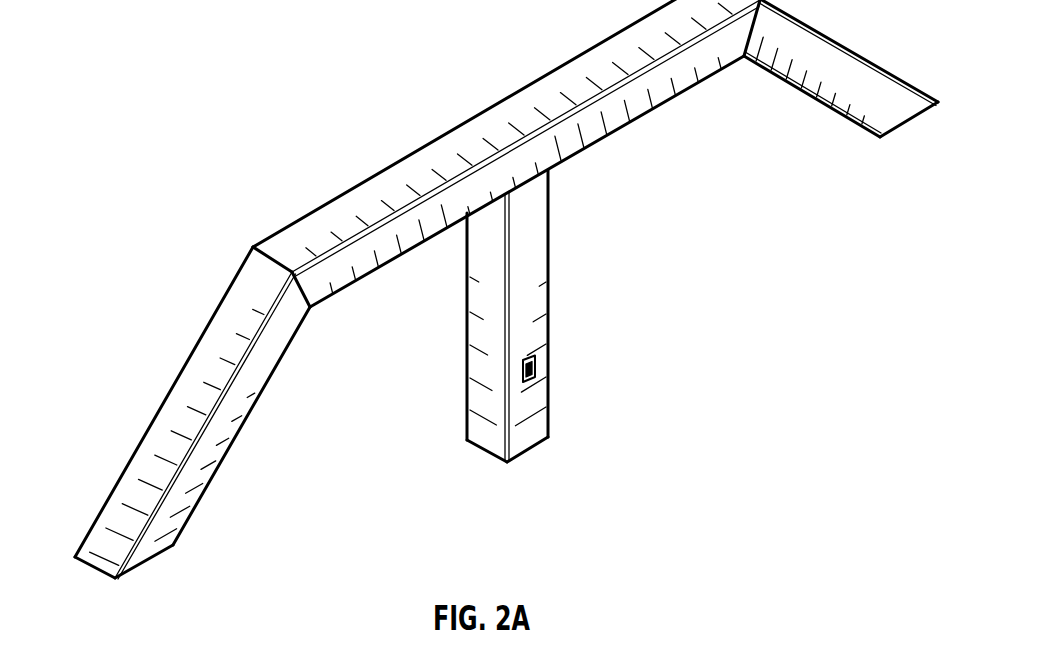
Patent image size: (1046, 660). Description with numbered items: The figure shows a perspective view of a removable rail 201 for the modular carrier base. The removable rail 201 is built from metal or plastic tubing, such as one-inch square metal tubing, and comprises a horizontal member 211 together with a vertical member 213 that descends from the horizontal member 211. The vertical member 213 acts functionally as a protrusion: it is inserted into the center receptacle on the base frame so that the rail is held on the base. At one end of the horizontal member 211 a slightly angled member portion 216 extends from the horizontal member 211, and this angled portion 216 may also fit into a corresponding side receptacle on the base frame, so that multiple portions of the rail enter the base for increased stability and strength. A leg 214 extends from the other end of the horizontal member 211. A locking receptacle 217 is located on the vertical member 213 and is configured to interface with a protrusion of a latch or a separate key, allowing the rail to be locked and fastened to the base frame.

The removable rail 201 is at (222, 70).
The horizontal member 211 is at (387, 169).
The vertical member 213 is at (549, 262).
The leg 214 is at (133, 458).
The angled member portion 216 is at (851, 51).
The locking receptacle 217 is at (536, 369).